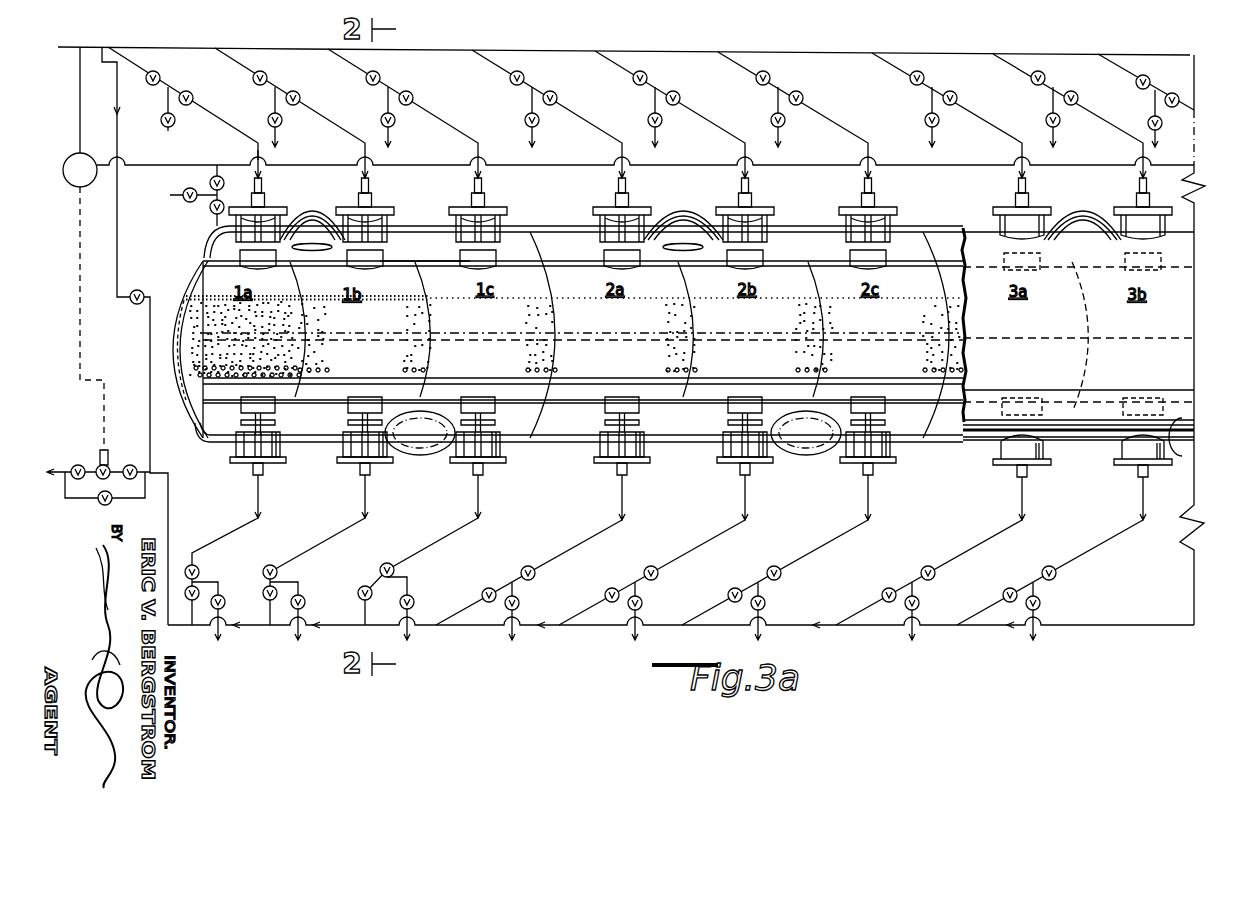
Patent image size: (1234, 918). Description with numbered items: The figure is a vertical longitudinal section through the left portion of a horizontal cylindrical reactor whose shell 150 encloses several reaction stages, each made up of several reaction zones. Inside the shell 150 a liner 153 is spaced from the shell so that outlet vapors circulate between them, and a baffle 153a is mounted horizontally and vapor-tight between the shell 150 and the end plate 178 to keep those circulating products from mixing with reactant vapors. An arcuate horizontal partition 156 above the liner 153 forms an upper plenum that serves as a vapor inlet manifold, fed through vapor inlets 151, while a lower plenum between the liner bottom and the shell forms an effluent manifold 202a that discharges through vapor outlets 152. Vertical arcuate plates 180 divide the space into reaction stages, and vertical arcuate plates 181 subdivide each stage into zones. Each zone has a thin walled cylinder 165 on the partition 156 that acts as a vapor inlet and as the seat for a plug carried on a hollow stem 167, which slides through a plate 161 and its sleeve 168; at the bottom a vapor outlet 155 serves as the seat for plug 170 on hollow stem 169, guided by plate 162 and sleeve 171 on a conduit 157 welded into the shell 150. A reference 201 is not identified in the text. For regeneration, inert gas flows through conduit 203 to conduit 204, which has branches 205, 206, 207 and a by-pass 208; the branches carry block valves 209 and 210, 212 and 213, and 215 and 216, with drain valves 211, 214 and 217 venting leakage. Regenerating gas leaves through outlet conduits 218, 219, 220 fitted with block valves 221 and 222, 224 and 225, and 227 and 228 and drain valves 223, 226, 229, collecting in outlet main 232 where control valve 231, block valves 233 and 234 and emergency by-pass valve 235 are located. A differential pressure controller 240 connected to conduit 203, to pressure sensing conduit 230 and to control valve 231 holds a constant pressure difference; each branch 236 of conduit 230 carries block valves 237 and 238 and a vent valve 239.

The shell 150 is at (182, 305).
The vapor inlet 151 is at (1090, 210).
The vapor outlet 152 is at (816, 455).
The liner 153 is at (200, 260).
The baffle 153a is at (182, 325).
The vapor outlet 155 is at (350, 412).
The arcuate horizontal partition 156 is at (405, 300).
The conduit 157 is at (230, 457).
The plate 161 is at (1168, 208).
The plate 162 is at (1152, 466).
The thin walled cylinder 165 is at (1190, 249).
The hollow stem 167 is at (370, 186).
The sleeve 168 is at (360, 192).
The hollow stem 169 is at (1146, 478).
The plug 170 is at (208, 436).
The sleeve 171 is at (1140, 472).
The plate 178 is at (188, 378).
The vertical arcuate plate 180 is at (942, 280).
The vertical arcuate plate 181 is at (1082, 300).
The vessel section 201 is at (430, 240).
The first reaction stage effluent manifold 202a is at (438, 416).
The conduit 203 is at (90, 46).
The conduit 204 is at (538, 40).
The branch 205 is at (220, 108).
The branch 206 is at (332, 108).
The branch 207 is at (443, 106).
The by-pass 208 is at (120, 98).
The block valve 209 is at (161, 77).
The block valve 210 is at (194, 98).
The drain valve 211 is at (176, 122).
The block valve 212 is at (268, 77).
The block valve 213 is at (301, 97).
The drain valve 214 is at (282, 123).
The block valve 215 is at (381, 76).
The block valve 216 is at (414, 96).
The drain valve 217 is at (394, 124).
The regenerating gas outlet conduit 218 is at (228, 535).
The regenerating gas outlet conduit 219 is at (318, 545).
The regenerating gas outlet conduit 220 is at (440, 543).
The block valve 221 is at (200, 568).
The block valve 222 is at (186, 588).
The drain valve 223 is at (226, 598).
The block valve 224 is at (273, 564).
The block valve 225 is at (268, 615).
The drain valve 226 is at (305, 601).
The block valve 227 is at (392, 562).
The block valve 228 is at (365, 586).
The drain valve 229 is at (414, 602).
The pressure sensing conduit 230 is at (176, 163).
The control valve 231 is at (110, 458).
The regenerating gas outlet main 232 is at (56, 470).
The block valve 233 is at (134, 466).
The block valve 234 is at (80, 463).
The by-pass valve 235 is at (99, 504).
The branch 236 is at (210, 181).
The block valve 237 is at (252, 162).
The block valve 238 is at (210, 212).
The valve 239 is at (182, 201).
The differential pressure controller 240 is at (78, 150).